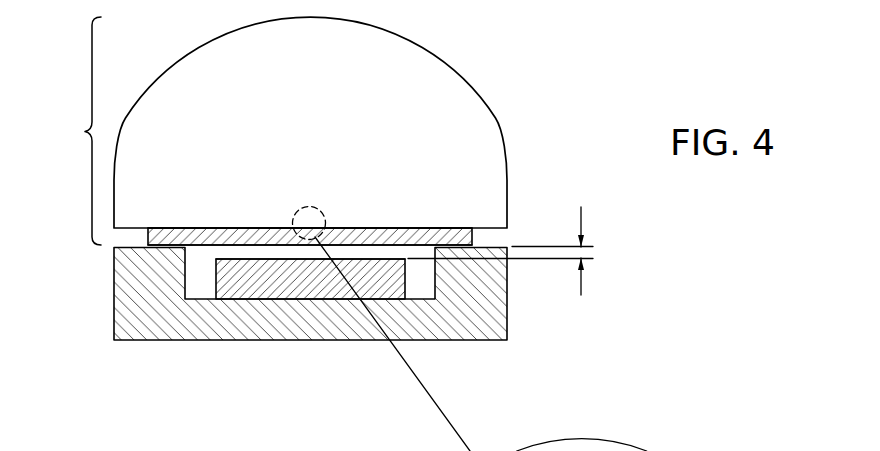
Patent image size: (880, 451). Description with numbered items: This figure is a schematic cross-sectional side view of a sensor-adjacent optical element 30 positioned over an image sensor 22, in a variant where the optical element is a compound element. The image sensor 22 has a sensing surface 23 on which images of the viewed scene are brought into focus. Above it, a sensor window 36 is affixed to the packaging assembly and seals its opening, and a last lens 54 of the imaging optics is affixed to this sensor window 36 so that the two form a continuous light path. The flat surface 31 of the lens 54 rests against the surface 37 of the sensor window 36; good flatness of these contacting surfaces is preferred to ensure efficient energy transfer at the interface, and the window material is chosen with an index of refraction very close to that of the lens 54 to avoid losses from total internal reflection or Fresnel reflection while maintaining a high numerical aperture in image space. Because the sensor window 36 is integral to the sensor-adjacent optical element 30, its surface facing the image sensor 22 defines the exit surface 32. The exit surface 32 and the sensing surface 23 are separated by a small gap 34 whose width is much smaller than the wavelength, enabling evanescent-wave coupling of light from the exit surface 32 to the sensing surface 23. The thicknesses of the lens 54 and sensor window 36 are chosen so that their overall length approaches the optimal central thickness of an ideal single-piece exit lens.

The sensor-adjacent optical element 30 is at (75, 131).
The last lens 54 is at (432, 90).
The surface of the sensor window 37 is at (248, 228).
The surface of the lens 31 is at (448, 228).
The sensor window 36 is at (168, 235).
The gap 34 is at (590, 251).
The exit surface 32 is at (200, 249).
The image sensor 22 is at (253, 280).
The sensing surface 23 is at (292, 256).